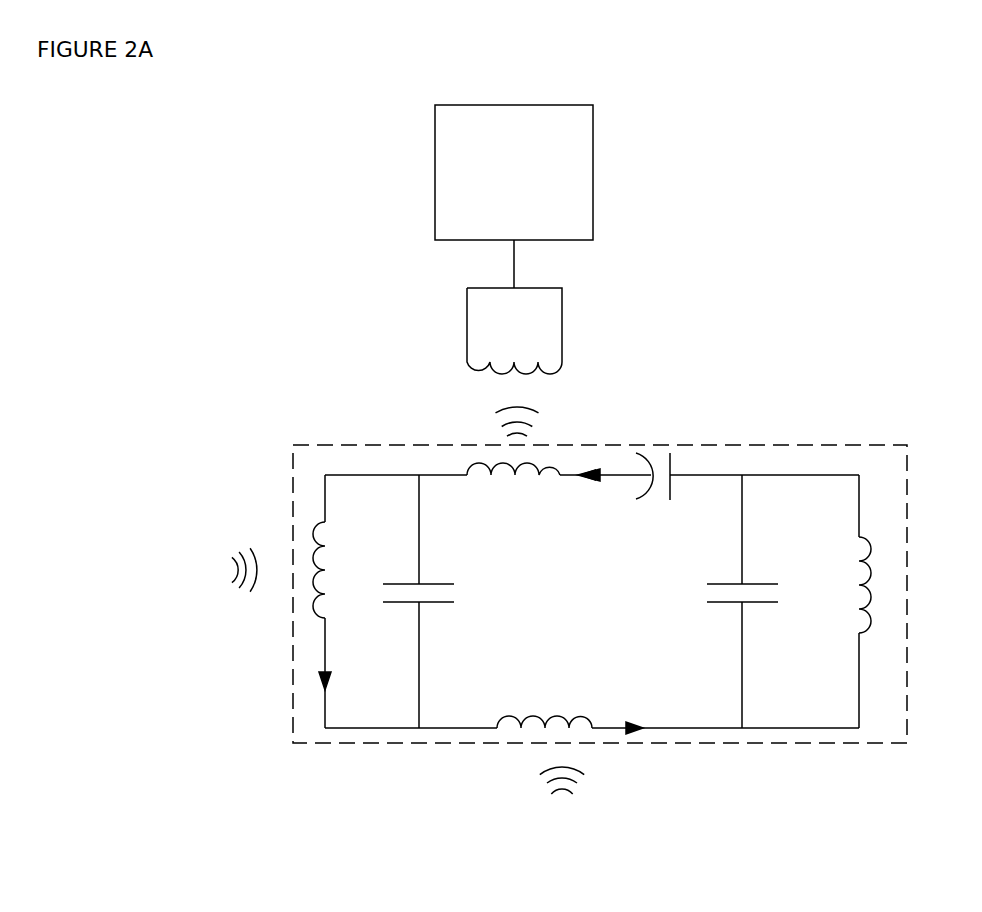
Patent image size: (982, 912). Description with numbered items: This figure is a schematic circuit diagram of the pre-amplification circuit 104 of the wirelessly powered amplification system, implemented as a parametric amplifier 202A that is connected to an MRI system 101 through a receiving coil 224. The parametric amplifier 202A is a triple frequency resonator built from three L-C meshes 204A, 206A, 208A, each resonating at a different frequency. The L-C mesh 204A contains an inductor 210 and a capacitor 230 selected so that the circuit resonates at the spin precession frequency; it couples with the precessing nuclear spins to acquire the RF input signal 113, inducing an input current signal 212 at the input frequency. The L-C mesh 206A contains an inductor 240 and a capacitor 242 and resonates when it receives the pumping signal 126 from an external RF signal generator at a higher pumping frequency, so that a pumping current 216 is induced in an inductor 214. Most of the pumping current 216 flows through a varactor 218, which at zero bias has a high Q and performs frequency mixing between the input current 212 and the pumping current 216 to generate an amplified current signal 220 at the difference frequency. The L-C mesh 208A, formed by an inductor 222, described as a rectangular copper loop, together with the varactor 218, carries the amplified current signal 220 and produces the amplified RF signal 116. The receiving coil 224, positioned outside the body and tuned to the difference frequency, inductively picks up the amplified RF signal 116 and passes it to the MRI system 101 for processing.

The MRI system 101 is at (545, 105).
The receiving coil 224 is at (562, 328).
The amplified RF signal 116 is at (540, 420).
The pre-amplification circuit 104 is at (828, 443).
The inductor 222 is at (468, 466).
The varactor 218 is at (670, 465).
The amplified current signal 220 is at (604, 480).
The L-C mesh 208A is at (612, 520).
The L-C mesh 204A is at (347, 512).
The inductor 210 is at (325, 568).
The input current signal 212 is at (325, 660).
The capacitor 230 is at (433, 603).
The capacitor 242 is at (735, 583).
The inductor 240 is at (873, 580).
The parametric amplifier 202A is at (765, 463).
The inductor 214 is at (553, 715).
The pumping current 216 is at (620, 725).
The L-C mesh 206A is at (797, 693).
The RF input signal 113 is at (230, 587).
The pumping signal 126 is at (560, 797).